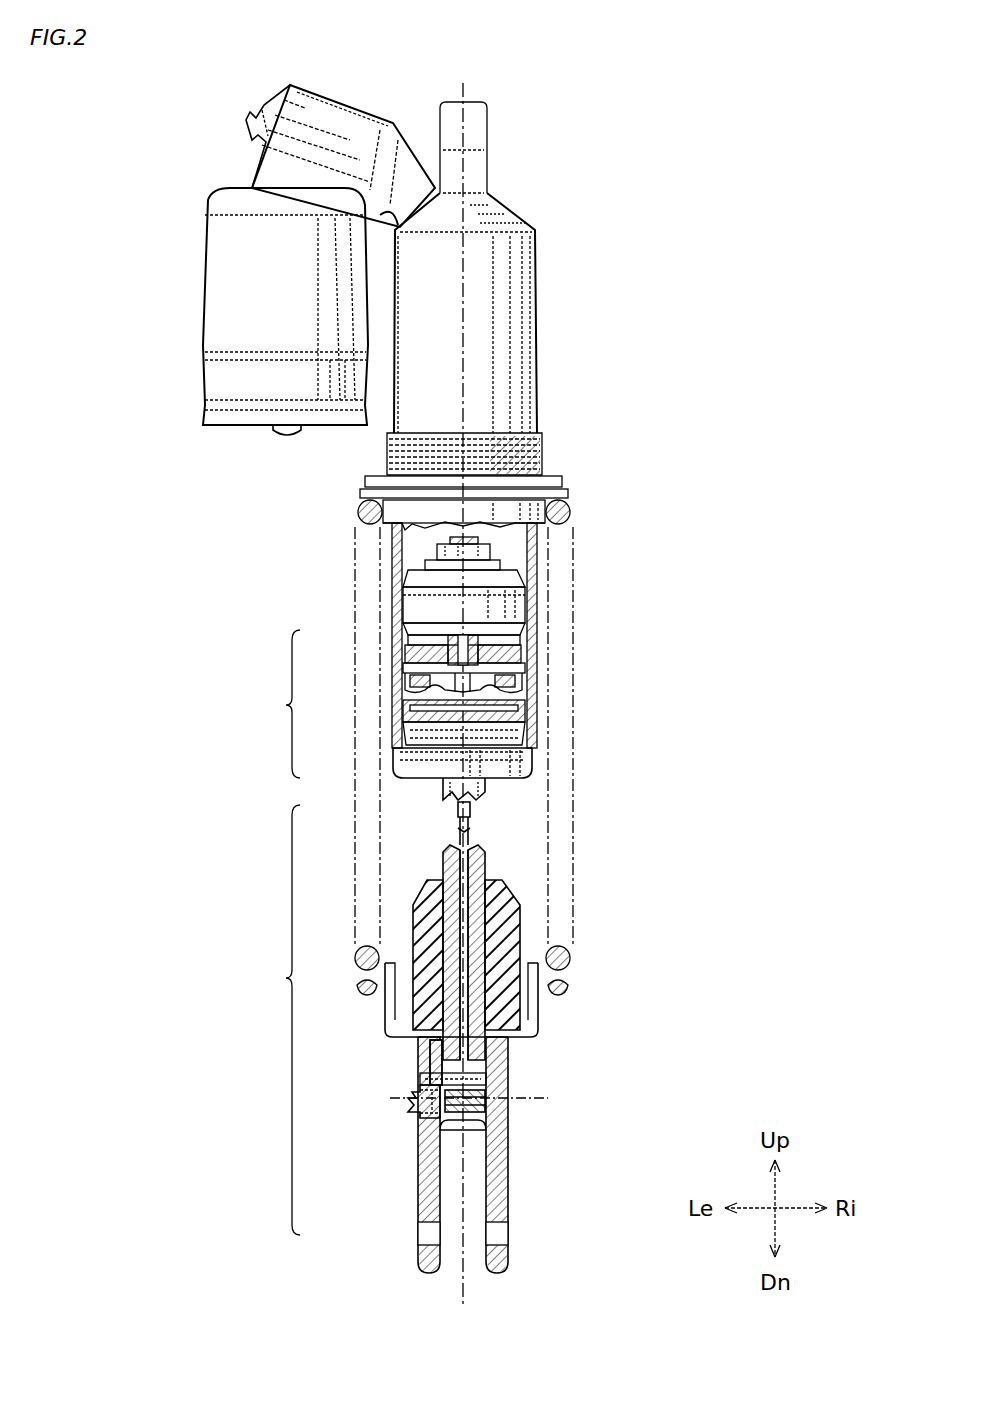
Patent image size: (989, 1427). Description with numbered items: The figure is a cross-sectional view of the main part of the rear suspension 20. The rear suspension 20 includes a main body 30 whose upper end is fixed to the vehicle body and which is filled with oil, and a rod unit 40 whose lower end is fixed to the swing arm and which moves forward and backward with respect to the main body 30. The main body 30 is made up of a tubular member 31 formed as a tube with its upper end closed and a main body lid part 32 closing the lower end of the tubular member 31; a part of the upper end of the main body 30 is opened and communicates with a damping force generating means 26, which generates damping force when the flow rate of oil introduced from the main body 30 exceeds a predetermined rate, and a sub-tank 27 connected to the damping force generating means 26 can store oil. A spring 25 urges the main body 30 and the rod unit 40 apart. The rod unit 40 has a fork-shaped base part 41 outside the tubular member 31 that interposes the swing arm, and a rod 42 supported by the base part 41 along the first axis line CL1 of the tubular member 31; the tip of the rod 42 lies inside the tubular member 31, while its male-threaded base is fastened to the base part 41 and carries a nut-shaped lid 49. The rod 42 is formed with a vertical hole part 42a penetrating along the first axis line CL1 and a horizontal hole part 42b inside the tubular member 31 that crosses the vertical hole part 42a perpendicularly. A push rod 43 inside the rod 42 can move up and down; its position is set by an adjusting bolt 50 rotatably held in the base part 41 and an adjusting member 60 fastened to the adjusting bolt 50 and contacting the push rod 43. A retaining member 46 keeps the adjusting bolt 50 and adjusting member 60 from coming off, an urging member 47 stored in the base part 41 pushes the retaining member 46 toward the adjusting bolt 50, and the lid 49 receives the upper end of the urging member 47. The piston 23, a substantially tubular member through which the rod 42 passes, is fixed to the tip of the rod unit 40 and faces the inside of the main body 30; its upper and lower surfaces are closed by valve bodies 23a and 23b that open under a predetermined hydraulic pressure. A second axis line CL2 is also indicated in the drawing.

The rear suspension 20 is at (675, 220).
The piston 23 is at (415, 603).
The valve body 23a is at (508, 590).
The valve body 23b is at (512, 655).
The spring 25 is at (573, 533).
The damping force generating means 26 is at (345, 135).
The sub-tank 27 is at (243, 293).
The main body 30 is at (274, 704).
The tubular member 31 is at (393, 657).
The main body lid part 32 is at (400, 760).
The rod unit 40 is at (274, 1020).
The base part 41 is at (420, 1205).
The rod 42 is at (445, 868).
The vertical hole part 42a is at (470, 833).
The horizontal hole part 42b is at (522, 700).
The push rod 43 is at (458, 805).
The retaining member 46 is at (425, 1078).
The urging member 47 is at (430, 1050).
The lid 49 is at (413, 960).
The adjusting bolt 50 is at (405, 1105).
The adjusting member 60 is at (470, 1123).
The first axis line CL1 is at (466, 83).
The center line 2 CL2 is at (540, 1095).